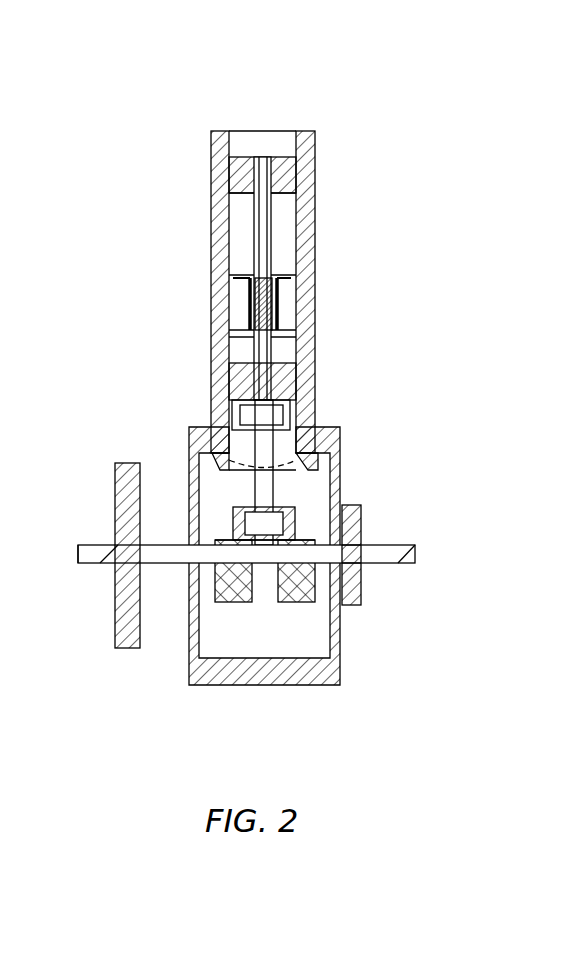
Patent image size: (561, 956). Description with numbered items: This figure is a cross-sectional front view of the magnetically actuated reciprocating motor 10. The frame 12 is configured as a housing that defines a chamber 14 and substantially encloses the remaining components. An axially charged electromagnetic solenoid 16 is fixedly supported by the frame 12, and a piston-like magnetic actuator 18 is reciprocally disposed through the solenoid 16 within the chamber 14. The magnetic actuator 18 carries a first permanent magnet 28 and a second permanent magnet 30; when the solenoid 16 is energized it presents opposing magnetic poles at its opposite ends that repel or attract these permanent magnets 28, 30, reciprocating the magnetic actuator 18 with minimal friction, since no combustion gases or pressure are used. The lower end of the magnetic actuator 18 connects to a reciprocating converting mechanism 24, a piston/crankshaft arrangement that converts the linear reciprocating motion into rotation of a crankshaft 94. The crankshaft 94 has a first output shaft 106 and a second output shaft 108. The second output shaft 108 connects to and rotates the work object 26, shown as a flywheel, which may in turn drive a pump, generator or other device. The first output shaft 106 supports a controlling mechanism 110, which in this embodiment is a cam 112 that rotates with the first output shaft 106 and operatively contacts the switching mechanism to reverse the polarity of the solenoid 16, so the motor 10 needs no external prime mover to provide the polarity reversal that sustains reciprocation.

The magnetically actuated reciprocating motor 10 is at (427, 222).
The frame 12 is at (220, 323).
The chamber 14 is at (288, 225).
The electromagnetic solenoid 16 is at (286, 305).
The magnetic actuator 18 is at (246, 237).
The reciprocating converting mechanism 24 is at (298, 504).
The work object 26 is at (118, 500).
The first permanent magnet 28 is at (245, 180).
The second permanent magnet 30 is at (283, 390).
The crankshaft 94 is at (298, 593).
The first output shaft 106 is at (410, 548).
The second output shaft 108 is at (95, 556).
The controlling mechanism 110 is at (372, 529).
The cam 112 is at (352, 585).